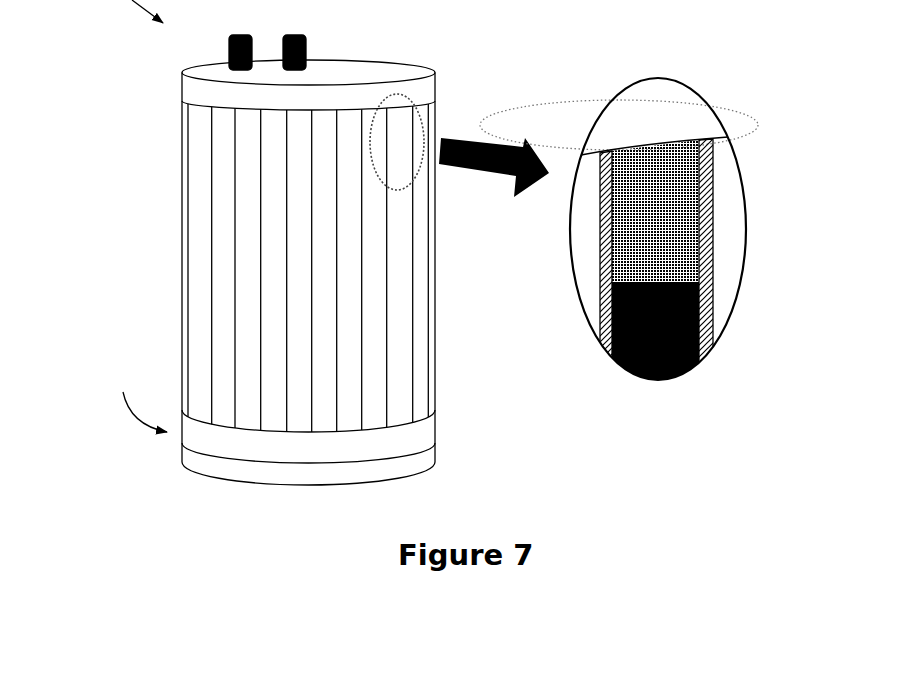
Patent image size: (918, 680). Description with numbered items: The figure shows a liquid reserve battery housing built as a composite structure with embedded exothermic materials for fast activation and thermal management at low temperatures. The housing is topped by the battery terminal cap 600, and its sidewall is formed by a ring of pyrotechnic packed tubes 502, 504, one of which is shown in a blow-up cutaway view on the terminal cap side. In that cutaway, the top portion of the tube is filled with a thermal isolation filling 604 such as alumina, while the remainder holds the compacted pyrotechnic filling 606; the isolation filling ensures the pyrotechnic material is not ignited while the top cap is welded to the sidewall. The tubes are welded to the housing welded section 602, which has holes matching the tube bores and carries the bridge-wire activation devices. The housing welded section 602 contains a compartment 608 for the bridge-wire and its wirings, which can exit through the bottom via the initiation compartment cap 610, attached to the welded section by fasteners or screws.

The battery terminal cap 600 is at (183, 92).
The housing welded section 602 is at (395, 438).
The initiation compartment cap 610 is at (413, 460).
The compartment 608 is at (133, 389).
The thermal isolation filling 604 is at (660, 210).
The pyrotechnic filling 606 is at (643, 335).
The sidewall tube 502 is at (413, 138).
The sidewall tube 504 is at (706, 254).